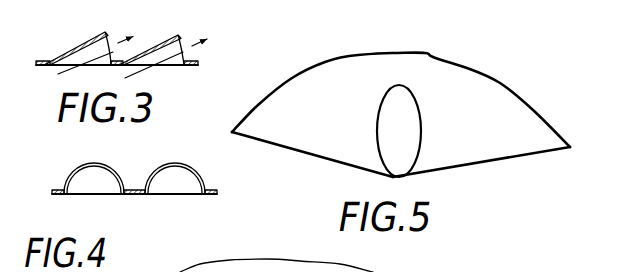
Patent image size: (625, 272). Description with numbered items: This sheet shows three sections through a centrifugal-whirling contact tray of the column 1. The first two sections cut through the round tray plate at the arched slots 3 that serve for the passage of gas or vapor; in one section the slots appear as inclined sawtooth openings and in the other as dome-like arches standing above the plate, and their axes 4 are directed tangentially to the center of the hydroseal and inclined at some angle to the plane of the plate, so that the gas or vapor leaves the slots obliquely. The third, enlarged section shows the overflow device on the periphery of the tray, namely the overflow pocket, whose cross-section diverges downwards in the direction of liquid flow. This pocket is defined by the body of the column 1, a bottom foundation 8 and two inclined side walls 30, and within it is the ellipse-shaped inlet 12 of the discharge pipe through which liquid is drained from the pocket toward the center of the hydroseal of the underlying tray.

In FIG. 5, the column 1 is at (517, 91).
In FIG. 3, the arched slots 3 is at (77, 47).
In FIG. 4, the arched slots 3 is at (165, 167).
In FIG. 4, the axes 4 is at (168, 185).
In FIG. 5, the bottom foundation 8 is at (483, 148).
In FIG. 5, the ellipse-shaped inlet 12 is at (413, 146).
In FIG. 5, the inclined side walls 30 is at (313, 157).